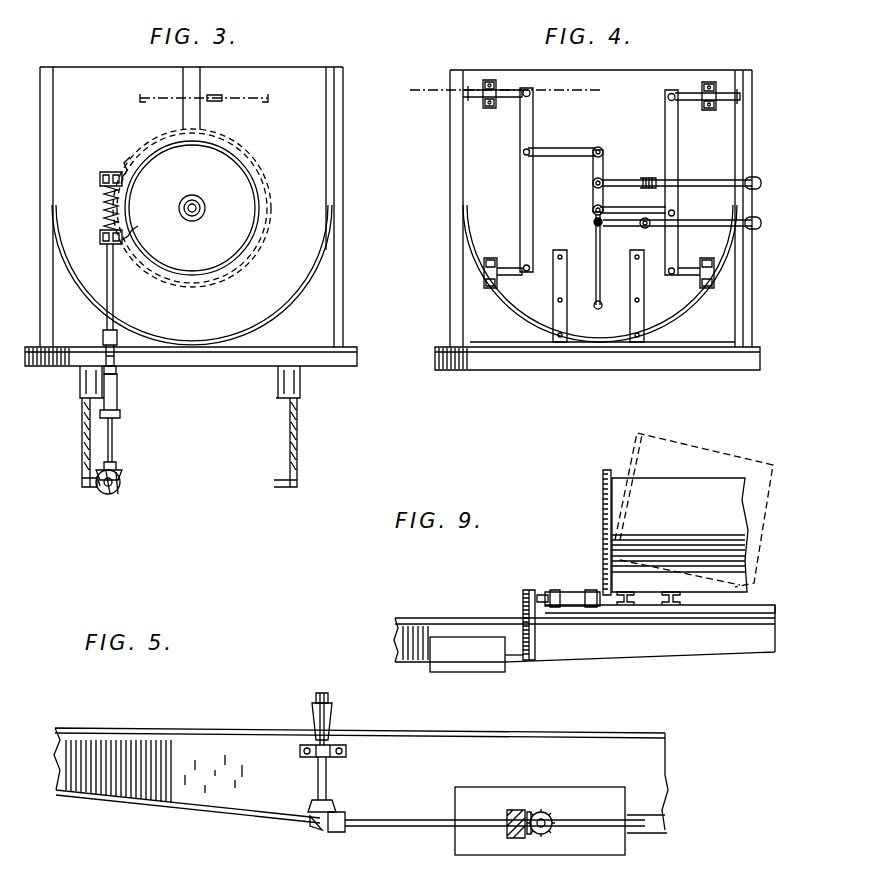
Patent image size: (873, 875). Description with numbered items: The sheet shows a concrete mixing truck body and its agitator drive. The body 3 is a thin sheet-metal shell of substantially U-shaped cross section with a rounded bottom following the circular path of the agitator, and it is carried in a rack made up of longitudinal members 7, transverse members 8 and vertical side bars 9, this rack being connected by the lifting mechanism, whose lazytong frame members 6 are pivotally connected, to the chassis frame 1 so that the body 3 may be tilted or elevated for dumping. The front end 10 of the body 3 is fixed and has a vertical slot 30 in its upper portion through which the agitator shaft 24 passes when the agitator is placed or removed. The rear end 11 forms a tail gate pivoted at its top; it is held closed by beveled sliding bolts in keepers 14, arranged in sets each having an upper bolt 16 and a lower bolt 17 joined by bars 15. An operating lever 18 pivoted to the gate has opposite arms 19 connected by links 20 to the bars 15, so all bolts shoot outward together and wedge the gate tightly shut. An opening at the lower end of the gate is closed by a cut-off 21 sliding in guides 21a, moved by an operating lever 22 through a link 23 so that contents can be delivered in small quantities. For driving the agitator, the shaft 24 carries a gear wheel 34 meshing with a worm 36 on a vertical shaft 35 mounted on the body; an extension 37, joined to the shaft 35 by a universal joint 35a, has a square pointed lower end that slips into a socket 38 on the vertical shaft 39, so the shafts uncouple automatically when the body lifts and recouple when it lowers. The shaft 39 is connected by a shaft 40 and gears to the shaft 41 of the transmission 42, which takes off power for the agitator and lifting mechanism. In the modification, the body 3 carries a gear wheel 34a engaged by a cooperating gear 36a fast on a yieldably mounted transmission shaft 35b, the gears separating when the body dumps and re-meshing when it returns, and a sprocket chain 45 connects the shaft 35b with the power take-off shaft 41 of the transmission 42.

In FIG. 3, the frame 1 is at (80, 450).
In FIG. 9, the frame 1 is at (642, 644).
In FIG. 5, the frame 1 is at (361, 780).
In FIG. 3, the body 3 is at (325, 205).
In FIG. 4, the body 3 is at (470, 165).
In FIG. 9, the body 3 is at (692, 512).
In FIG. 4, the frame members 6 is at (501, 90).
In FIG. 3, the longitudinal members 7 is at (310, 388).
In FIG. 3, the transverse members 8 is at (346, 348).
In FIG. 4, the transverse members 8 is at (456, 371).
In FIG. 9, the transverse members 8 is at (674, 612).
In FIG. 3, the vertical side bars 9 is at (40, 283).
In FIG. 4, the vertical side bars 9 is at (450, 264).
In FIG. 3, the front end 10 is at (255, 68).
In FIG. 4, the rear end 11 is at (601, 87).
In FIG. 4, the keepers 14 is at (489, 110).
In FIG. 4, the bars 15 is at (520, 170).
In FIG. 4, the upper bolt 16 is at (478, 90).
In FIG. 4, the lower bolt 17 is at (516, 272).
In FIG. 4, the operating lever 18 is at (705, 186).
In FIG. 4, the arms 19 is at (603, 168).
In FIG. 4, the links 20 is at (563, 150).
In FIG. 4, the cut-off 21 is at (612, 336).
In FIG. 4, the guides 21a is at (562, 315).
In FIG. 4, the operating lever 22 is at (717, 227).
In FIG. 4, the link 23 is at (600, 265).
In FIG. 3, the shaft 24 is at (196, 200).
In FIG. 3, the vertical slot 30 is at (190, 70).
In FIG. 3, the gear wheel 34 is at (130, 160).
In FIG. 9, the gear wheel 34a is at (603, 526).
In FIG. 3, the vertical shaft 35 is at (118, 312).
In FIG. 3, the universal joint 35a is at (103, 335).
In FIG. 9, the transmission shaft 35b is at (551, 586).
In FIG. 3, the worm 36 is at (100, 212).
In FIG. 9, the cooperating gear 36a is at (582, 590).
In FIG. 3, the extension 37 is at (118, 370).
In FIG. 5, the extension 37 is at (330, 698).
In FIG. 3, the socket 38 is at (118, 404).
In FIG. 5, the socket 38 is at (330, 724).
In FIG. 3, the shaft 39 is at (113, 440).
In FIG. 5, the shaft 39 is at (326, 784).
In FIG. 5, the shaft 40 is at (402, 816).
In FIG. 5, the shaft 41 is at (550, 815).
In FIG. 9, the transmission 42 is at (476, 654).
In FIG. 5, the transmission 42 is at (540, 821).
In FIG. 9, the sprocket chain 45 is at (536, 640).